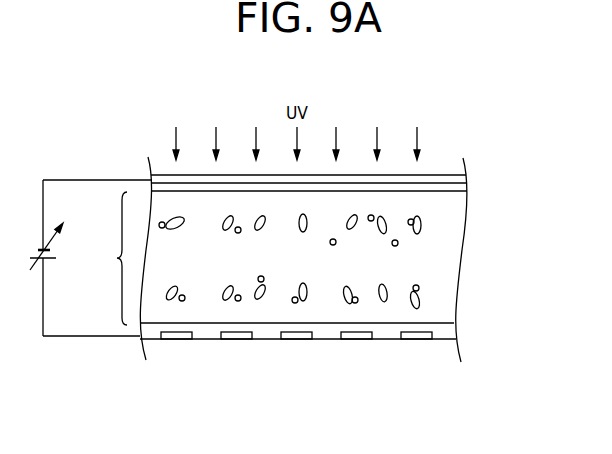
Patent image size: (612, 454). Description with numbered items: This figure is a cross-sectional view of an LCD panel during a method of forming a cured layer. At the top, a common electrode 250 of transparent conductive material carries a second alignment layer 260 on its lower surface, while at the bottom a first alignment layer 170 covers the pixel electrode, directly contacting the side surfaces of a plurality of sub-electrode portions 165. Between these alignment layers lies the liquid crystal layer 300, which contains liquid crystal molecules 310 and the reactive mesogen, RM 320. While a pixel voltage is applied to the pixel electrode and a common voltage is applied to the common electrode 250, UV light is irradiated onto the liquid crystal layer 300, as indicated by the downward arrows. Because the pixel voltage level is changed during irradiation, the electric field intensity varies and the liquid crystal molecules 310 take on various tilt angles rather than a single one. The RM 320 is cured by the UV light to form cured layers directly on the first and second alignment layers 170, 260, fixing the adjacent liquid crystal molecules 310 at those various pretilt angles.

The common electrode 250 is at (456, 179).
The second alignment layer 260 is at (456, 187).
The liquid crystal layer 300 is at (102, 258).
The liquid crystal molecules 310 is at (419, 297).
The RM 320 is at (418, 287).
The sub-electrode portion 165 is at (295, 340).
The first alignment layer 170 is at (382, 340).